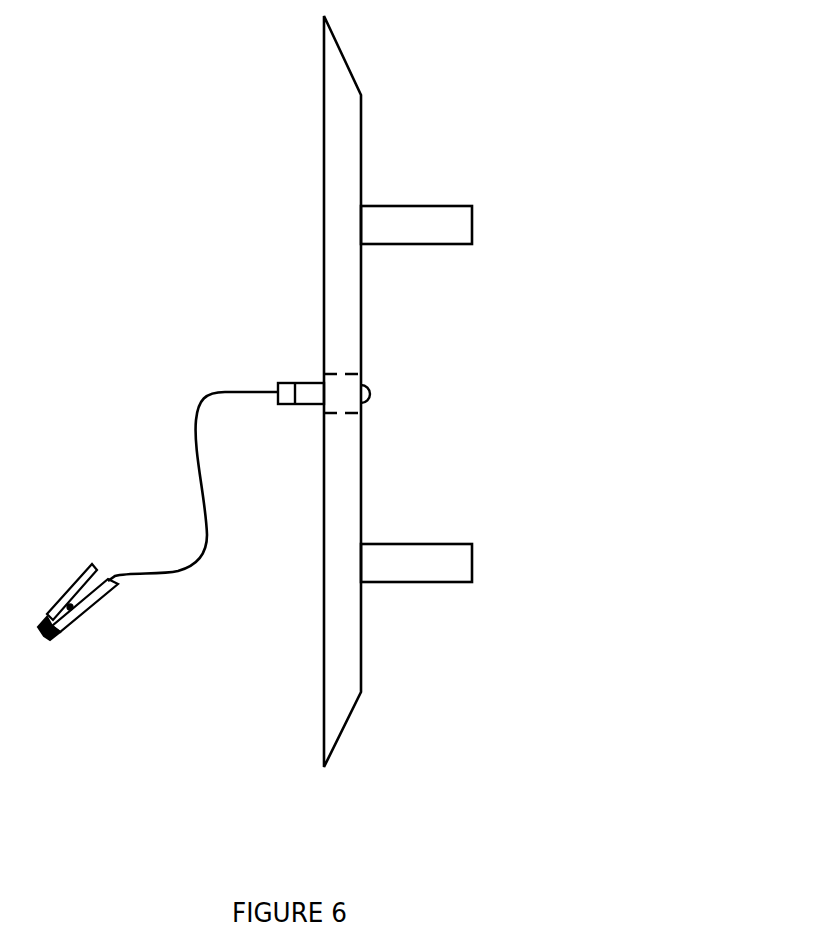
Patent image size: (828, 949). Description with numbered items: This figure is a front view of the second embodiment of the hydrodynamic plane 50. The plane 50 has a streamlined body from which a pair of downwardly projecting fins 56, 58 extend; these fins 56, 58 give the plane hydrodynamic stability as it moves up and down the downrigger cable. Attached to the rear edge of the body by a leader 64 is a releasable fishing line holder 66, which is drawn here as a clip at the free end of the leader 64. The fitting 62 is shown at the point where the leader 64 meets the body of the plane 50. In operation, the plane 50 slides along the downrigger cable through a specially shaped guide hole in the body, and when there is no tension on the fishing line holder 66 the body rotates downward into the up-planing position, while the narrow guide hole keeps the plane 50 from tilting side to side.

The hydrodynamic plane 50 is at (390, 85).
The fin 56 is at (447, 244).
The fin 58 is at (450, 585).
The connector 62 is at (295, 382).
The leader 64 is at (200, 557).
The releasable fishing line holder 66 is at (75, 622).